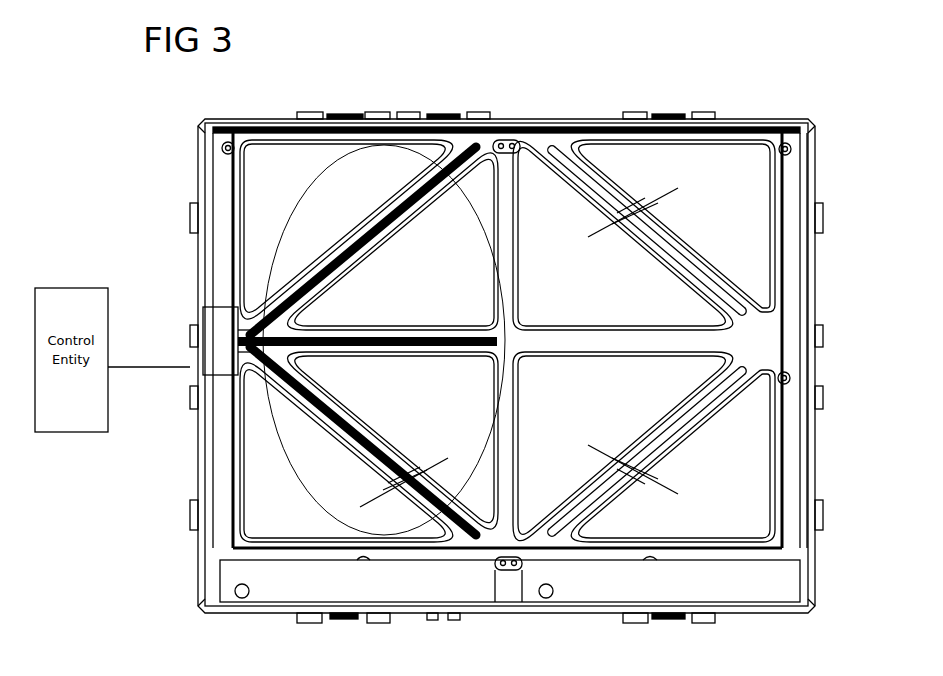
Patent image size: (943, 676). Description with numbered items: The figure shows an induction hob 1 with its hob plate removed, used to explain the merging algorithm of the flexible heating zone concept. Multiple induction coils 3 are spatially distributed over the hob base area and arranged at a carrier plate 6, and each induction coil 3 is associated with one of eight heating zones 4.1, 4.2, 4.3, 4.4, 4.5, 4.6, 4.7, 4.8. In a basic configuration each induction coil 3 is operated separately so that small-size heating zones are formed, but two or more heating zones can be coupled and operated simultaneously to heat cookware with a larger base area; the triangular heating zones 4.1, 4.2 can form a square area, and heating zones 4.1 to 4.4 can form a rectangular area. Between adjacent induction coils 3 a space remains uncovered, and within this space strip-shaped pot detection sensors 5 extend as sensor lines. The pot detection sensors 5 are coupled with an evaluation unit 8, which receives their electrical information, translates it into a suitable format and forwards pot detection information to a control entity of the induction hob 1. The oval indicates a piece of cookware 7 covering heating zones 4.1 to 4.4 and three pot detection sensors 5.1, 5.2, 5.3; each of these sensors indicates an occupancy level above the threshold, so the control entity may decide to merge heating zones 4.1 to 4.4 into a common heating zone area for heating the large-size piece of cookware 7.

The induction hob 1 is at (840, 122).
The induction coil 3 is at (740, 160).
The heating zone 4.1 is at (380, 155).
The heating zone 4.2 is at (483, 170).
The heating zone 4.3 is at (283, 530).
The heating zone 4.4 is at (480, 515).
The heating zone 4.5 is at (742, 250).
The heating zone 4.6 is at (667, 306).
The heating zone 4.7 is at (667, 394).
The heating zone 4.8 is at (742, 460).
The pot detection sensor 5 is at (492, 341).
The pot detection sensor 5.1 is at (365, 237).
The pot detection sensor 5.2 is at (422, 336).
The pot detection sensor 5.3 is at (355, 455).
The carrier plate 6 is at (557, 145).
The piece of cookware 7 is at (266, 246).
The evaluation unit 8 is at (218, 341).